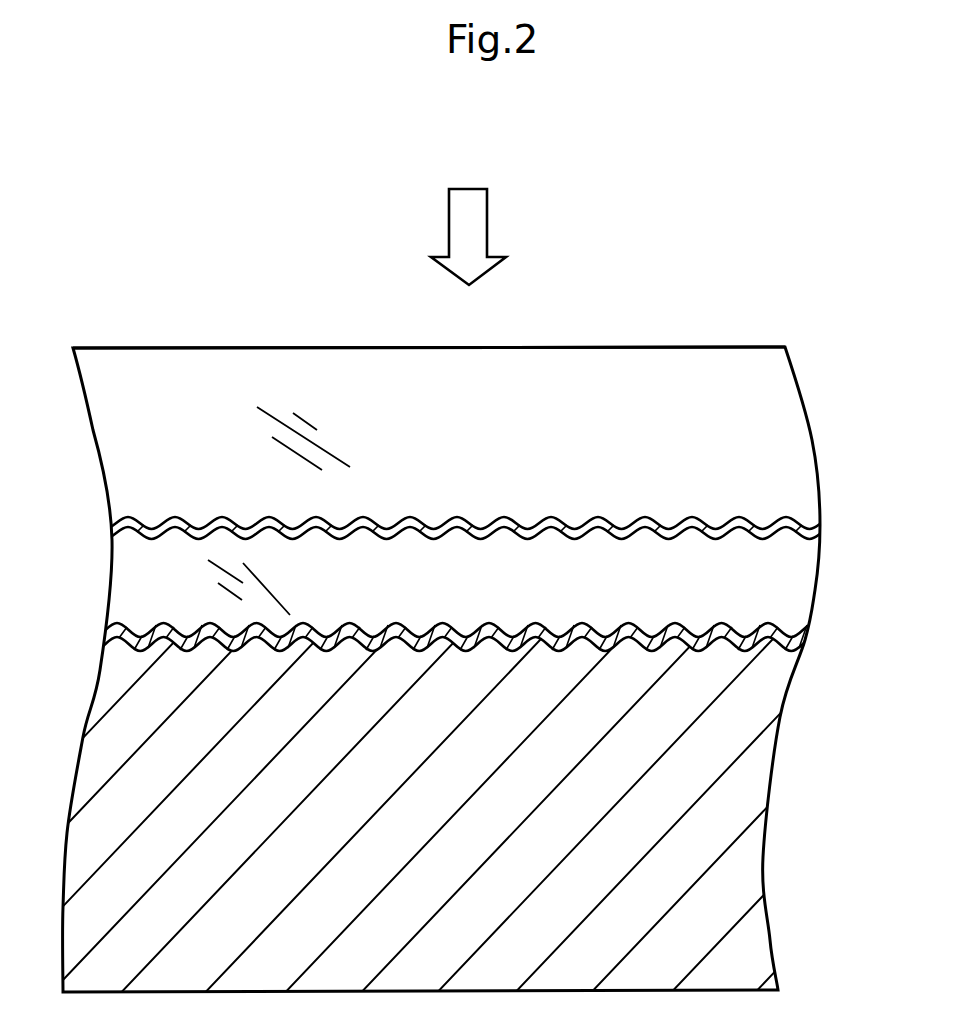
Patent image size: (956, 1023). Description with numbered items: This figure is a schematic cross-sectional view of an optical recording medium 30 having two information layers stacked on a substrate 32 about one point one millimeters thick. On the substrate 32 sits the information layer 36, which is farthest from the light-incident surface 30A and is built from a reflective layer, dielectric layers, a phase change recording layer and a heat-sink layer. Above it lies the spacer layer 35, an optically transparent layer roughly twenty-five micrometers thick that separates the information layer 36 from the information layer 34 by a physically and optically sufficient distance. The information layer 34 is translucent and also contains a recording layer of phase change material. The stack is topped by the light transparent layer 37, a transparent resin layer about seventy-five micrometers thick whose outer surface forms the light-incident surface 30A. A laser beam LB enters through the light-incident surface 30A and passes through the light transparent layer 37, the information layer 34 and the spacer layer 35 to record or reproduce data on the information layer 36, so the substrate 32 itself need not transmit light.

The optical recording medium 30 is at (664, 253).
The light-incident surface 30A is at (712, 345).
The light transparent layer 37 is at (767, 402).
The information layer 34 is at (738, 517).
The spacer layer 35 is at (768, 586).
The information layer 36 is at (770, 639).
The substrate 32 is at (737, 861).
The laser beam LB is at (489, 207).